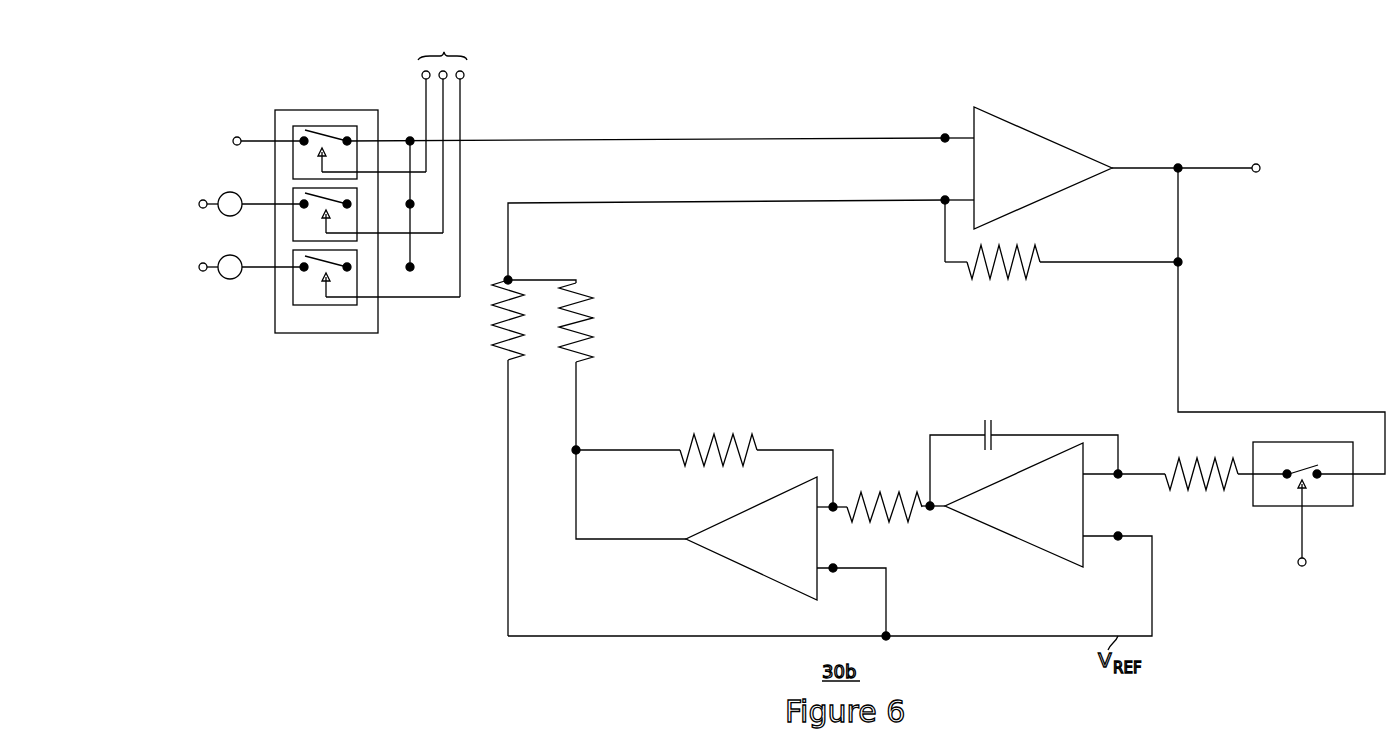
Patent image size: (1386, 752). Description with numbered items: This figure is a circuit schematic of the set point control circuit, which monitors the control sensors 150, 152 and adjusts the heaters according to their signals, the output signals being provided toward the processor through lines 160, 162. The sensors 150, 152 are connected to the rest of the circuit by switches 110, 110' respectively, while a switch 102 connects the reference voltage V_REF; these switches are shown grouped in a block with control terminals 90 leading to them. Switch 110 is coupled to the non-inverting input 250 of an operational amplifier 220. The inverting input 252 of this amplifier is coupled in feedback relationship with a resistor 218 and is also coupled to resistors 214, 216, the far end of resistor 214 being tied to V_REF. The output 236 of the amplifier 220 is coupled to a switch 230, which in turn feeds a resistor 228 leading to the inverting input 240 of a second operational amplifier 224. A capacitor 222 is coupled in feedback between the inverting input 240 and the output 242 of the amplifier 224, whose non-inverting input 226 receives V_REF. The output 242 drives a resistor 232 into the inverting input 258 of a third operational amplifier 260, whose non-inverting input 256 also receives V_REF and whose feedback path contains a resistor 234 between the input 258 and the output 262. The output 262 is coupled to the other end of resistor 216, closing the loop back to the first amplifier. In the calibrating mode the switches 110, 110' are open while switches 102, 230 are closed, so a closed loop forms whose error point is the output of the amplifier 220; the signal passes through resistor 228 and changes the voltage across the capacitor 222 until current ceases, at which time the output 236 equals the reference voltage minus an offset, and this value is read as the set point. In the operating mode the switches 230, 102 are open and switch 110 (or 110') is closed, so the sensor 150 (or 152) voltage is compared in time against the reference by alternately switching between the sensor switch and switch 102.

The control signal terminals 90 is at (865, 310).
The switch 102 is at (276, 128).
The switch 110 is at (303, 221).
The switch 110' is at (325, 309).
The sensor 150 is at (230, 192).
The sensor 152 is at (230, 255).
The line 160 is at (199, 204).
The line 162 is at (199, 266).
The resistor 214 is at (500, 357).
The resistor 216 is at (590, 317).
The resistor 218 is at (1023, 277).
The operational amplifier 220 is at (1040, 203).
The capacitor 222 is at (985, 441).
The operational amplifier 224 is at (1000, 533).
The non-inverting input 226 is at (1118, 540).
The resistor 228 is at (1167, 486).
The switch 230 is at (1272, 506).
The resistor 232 is at (898, 489).
The resistor 234 is at (680, 437).
The output 236 is at (1174, 164).
The inverting input 240 is at (1119, 470).
The output 242 is at (928, 510).
The non-inverting input 250 is at (940, 134).
The inverting input 252 is at (940, 206).
The non-inverting input 256 is at (835, 572).
The inverting input 258 is at (834, 511).
The operational amplifier 260 is at (750, 570).
The output 262 is at (686, 540).